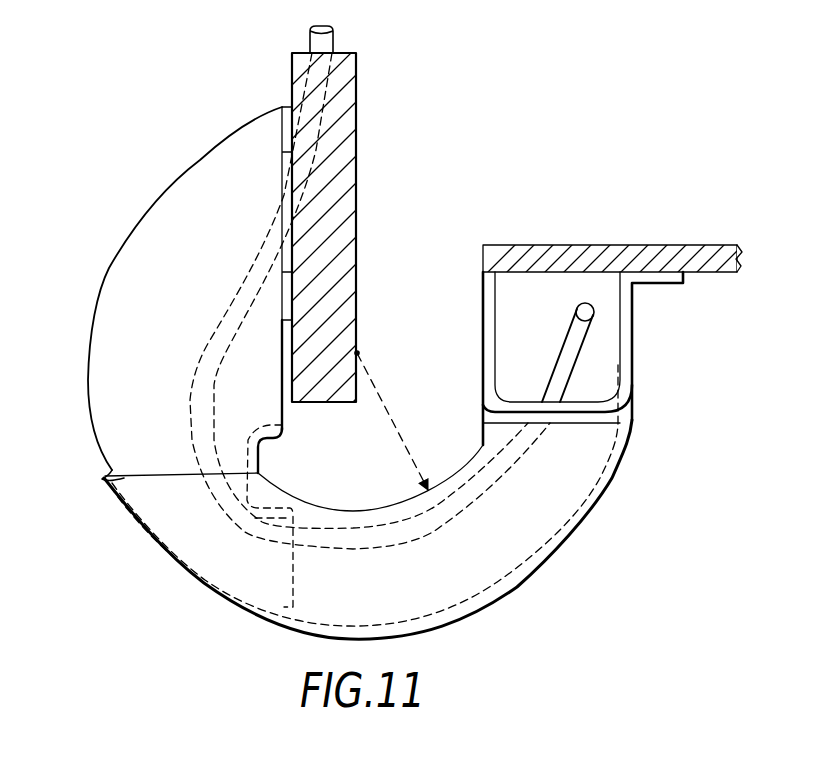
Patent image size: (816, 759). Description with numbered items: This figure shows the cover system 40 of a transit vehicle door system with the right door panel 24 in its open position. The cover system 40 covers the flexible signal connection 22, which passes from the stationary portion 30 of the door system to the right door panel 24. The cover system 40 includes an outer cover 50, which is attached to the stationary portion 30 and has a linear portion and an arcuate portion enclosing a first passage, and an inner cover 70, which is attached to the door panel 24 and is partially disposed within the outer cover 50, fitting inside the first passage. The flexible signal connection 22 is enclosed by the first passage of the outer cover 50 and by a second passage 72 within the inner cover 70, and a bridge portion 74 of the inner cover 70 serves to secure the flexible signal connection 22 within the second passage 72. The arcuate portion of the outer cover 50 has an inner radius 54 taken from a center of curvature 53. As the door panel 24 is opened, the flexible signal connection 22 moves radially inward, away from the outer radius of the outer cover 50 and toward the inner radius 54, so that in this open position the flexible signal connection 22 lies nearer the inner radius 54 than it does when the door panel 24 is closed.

The flexible signal connection 22 is at (203, 357).
The right door panel 24 is at (343, 155).
The stationary portion 30 is at (721, 258).
The cover system 40 is at (522, 167).
The outer cover 50 is at (633, 404).
The center of curvature 53 is at (358, 351).
The inner radius 54 is at (392, 417).
The inner cover 70 is at (93, 296).
The second passage 72 is at (100, 382).
The bridge portion 74 is at (262, 459).